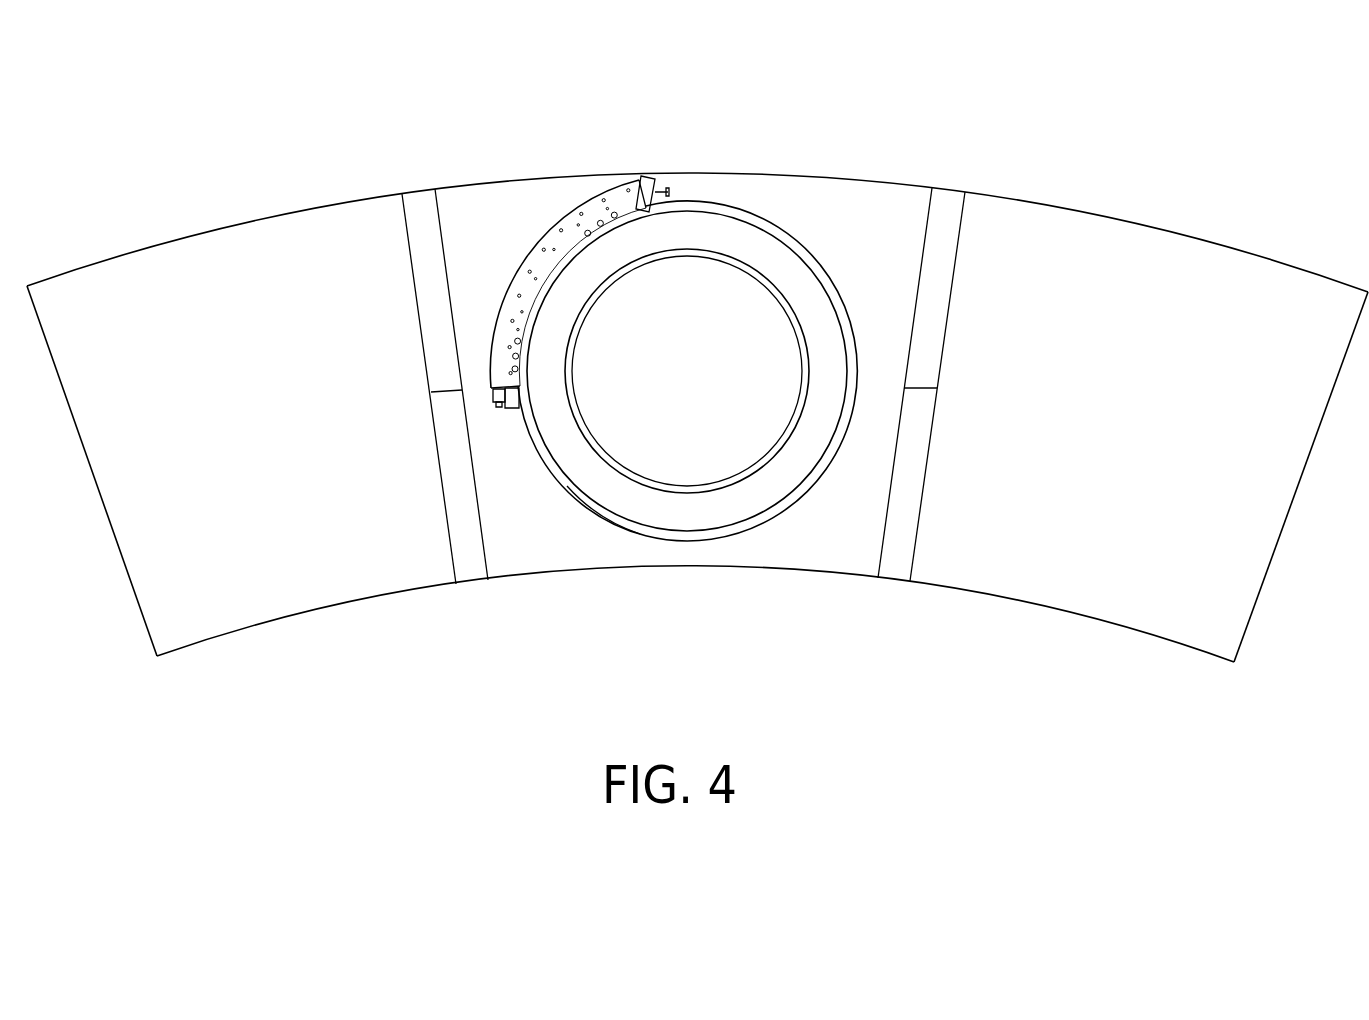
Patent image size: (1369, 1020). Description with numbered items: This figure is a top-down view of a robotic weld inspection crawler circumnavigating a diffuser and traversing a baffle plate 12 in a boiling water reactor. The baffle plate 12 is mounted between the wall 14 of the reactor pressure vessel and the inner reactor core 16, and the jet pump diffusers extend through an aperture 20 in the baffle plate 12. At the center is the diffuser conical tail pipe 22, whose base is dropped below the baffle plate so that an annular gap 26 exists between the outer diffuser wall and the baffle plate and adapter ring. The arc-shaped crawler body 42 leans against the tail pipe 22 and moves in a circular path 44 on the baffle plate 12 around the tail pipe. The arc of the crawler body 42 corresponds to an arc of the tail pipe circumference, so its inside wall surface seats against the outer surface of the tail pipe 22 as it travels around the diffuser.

The baffle plate 12 is at (250, 440).
The wall of the reactor pressure vessel 14 is at (870, 181).
The inner reactor core 16 is at (825, 573).
The aperture 20 is at (852, 327).
The diffuser conical tail pipe 22 is at (768, 492).
The annular gap 26 is at (842, 425).
The arc-shaped crawler body 42 is at (542, 258).
The circular path 44 is at (578, 507).